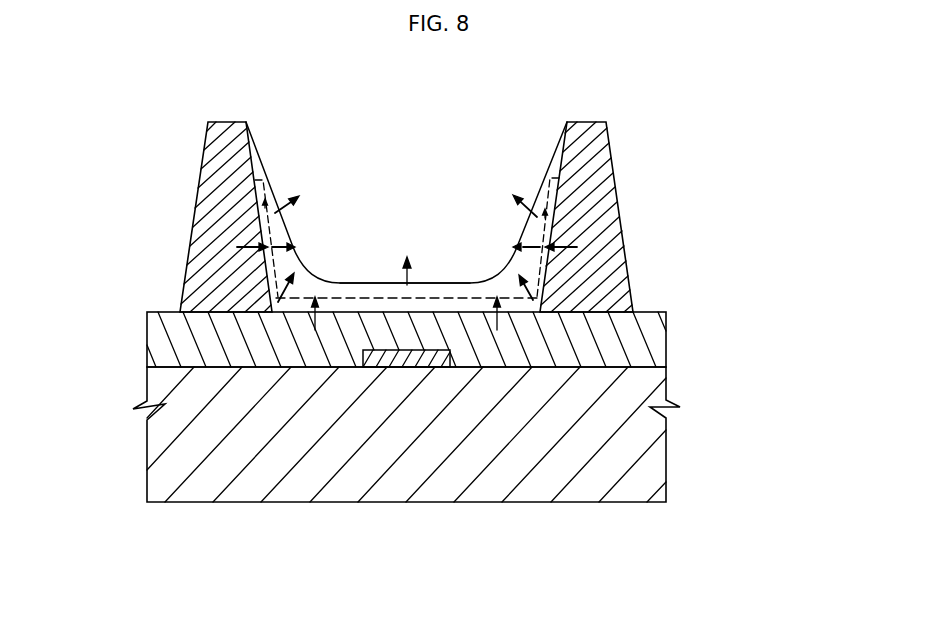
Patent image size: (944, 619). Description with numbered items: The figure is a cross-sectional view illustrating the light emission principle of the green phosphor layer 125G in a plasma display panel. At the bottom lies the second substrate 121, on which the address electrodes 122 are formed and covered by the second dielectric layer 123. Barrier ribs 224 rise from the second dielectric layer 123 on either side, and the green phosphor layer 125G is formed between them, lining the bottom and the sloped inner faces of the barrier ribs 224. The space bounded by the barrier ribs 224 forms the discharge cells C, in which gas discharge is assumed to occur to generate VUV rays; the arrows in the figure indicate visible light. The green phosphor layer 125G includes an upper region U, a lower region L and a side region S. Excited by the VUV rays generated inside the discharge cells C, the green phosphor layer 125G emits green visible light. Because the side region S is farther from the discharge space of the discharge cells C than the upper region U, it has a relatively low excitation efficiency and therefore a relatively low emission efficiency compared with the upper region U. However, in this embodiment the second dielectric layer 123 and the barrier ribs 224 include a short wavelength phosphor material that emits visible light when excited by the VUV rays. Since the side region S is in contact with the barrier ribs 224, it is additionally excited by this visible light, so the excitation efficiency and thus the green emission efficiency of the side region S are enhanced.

The second substrate 121 is at (660, 455).
The address electrodes 122 is at (398, 367).
The second dielectric layer 123 is at (660, 338).
The barrier ribs 224 is at (613, 203).
The green phosphor layer 125G is at (290, 307).
The upper region U is at (350, 288).
The lower region L is at (388, 303).
The discharge cells C is at (461, 147).
The side region S is at (555, 178).